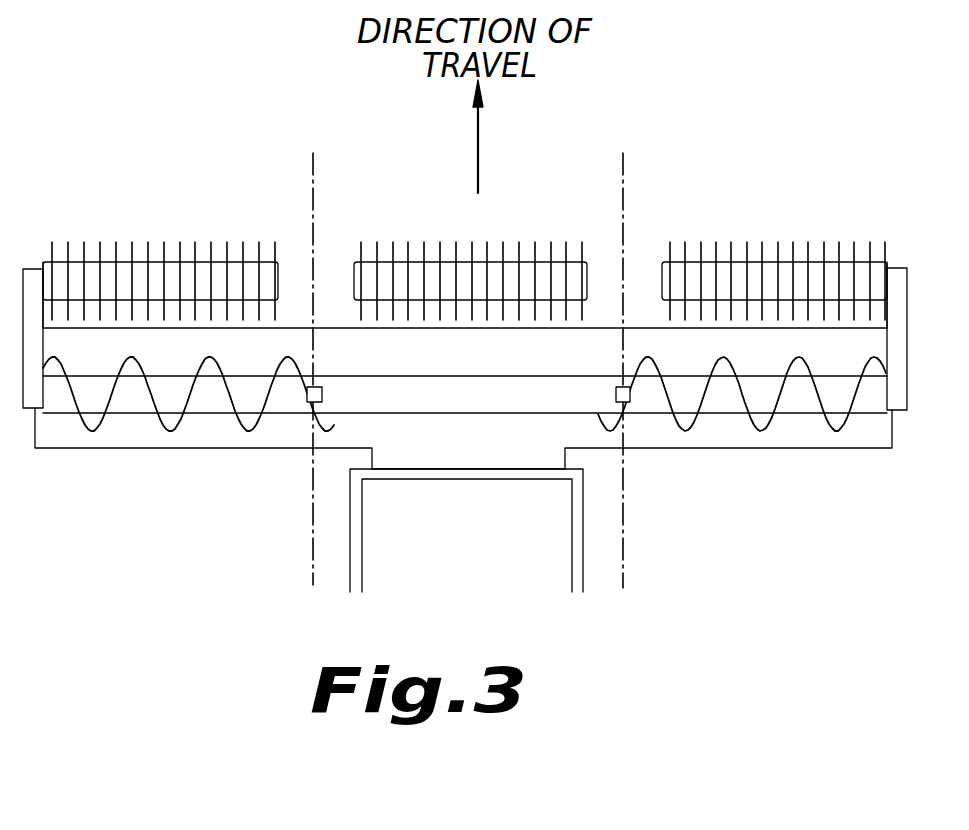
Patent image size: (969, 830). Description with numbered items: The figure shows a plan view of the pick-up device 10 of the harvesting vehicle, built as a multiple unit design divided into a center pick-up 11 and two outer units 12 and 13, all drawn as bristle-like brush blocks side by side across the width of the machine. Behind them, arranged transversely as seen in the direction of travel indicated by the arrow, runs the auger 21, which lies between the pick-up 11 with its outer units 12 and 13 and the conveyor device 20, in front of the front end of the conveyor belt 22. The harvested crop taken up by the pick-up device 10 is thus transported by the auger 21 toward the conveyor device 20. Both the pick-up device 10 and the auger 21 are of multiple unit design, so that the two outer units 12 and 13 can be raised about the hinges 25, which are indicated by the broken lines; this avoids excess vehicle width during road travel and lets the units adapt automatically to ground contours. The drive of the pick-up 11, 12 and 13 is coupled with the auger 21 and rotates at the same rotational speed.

The pick-up device 10 is at (110, 449).
The center pick-up 11 is at (448, 228).
The outer unit 12 is at (170, 228).
The outer unit 13 is at (752, 232).
The conveyor device 20 is at (489, 524).
The auger 21 is at (220, 403).
The conveyor belt 22 is at (466, 530).
The hinge 25 is at (322, 395).